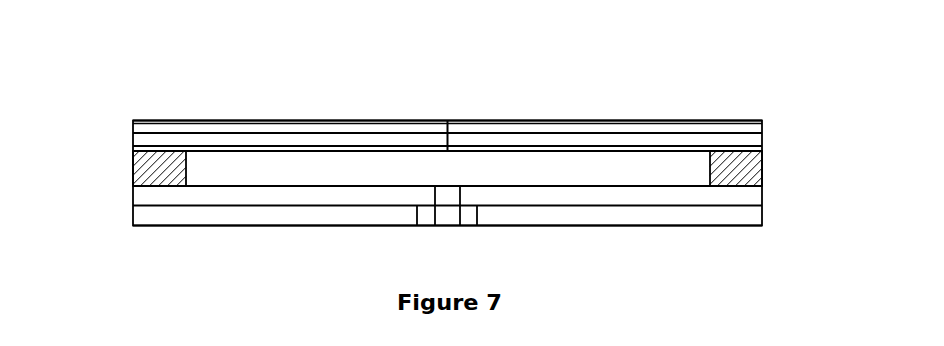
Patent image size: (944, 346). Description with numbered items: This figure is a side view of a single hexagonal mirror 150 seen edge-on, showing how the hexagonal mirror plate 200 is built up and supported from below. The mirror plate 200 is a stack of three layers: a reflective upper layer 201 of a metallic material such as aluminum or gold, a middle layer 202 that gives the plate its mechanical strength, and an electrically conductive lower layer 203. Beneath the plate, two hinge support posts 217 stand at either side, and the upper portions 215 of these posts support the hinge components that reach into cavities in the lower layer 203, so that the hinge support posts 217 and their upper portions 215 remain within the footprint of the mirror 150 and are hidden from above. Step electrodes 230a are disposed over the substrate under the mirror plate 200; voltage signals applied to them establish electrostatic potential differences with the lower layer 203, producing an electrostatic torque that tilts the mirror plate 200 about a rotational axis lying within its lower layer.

The hexagonal mirror 150 is at (128, 70).
The hexagonal mirror plate 200 is at (675, 110).
The reflective upper layer 201 is at (768, 126).
The middle layer 202 is at (768, 138).
The lower layer 203 is at (768, 148).
The upper portion of hinge support post 215 is at (146, 178).
The hinge support post 217 is at (129, 166).
The step electrode 230a is at (580, 196).